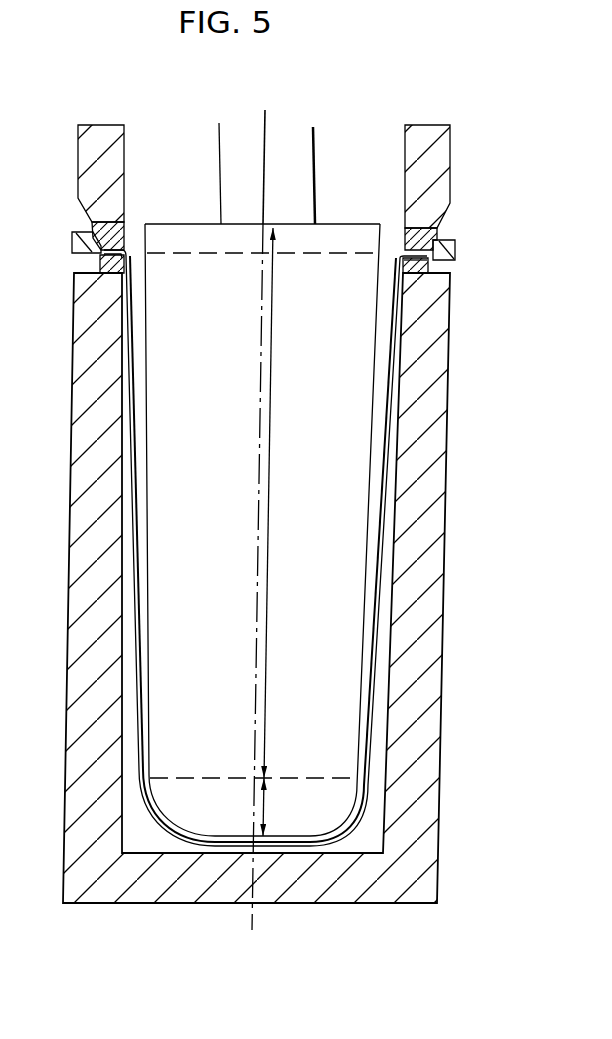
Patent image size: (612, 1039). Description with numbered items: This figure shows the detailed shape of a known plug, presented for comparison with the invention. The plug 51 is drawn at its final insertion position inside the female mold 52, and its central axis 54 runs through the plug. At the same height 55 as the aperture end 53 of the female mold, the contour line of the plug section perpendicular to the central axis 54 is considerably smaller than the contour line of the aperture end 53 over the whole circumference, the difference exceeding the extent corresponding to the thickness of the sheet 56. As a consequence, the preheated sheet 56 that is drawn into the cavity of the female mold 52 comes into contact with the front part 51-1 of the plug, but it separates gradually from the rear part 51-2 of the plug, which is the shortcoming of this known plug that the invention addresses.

The plug 51 is at (333, 517).
The front part of the plug 51-1 is at (226, 812).
The rear part of the plug 51-2 is at (300, 430).
The female mold 52 is at (427, 591).
The aperture end of the female mold 53 is at (430, 264).
The central axis of the plug 54 is at (267, 136).
The same height as the aperture end of the female mold 55 is at (357, 256).
The sheet 56 is at (398, 372).